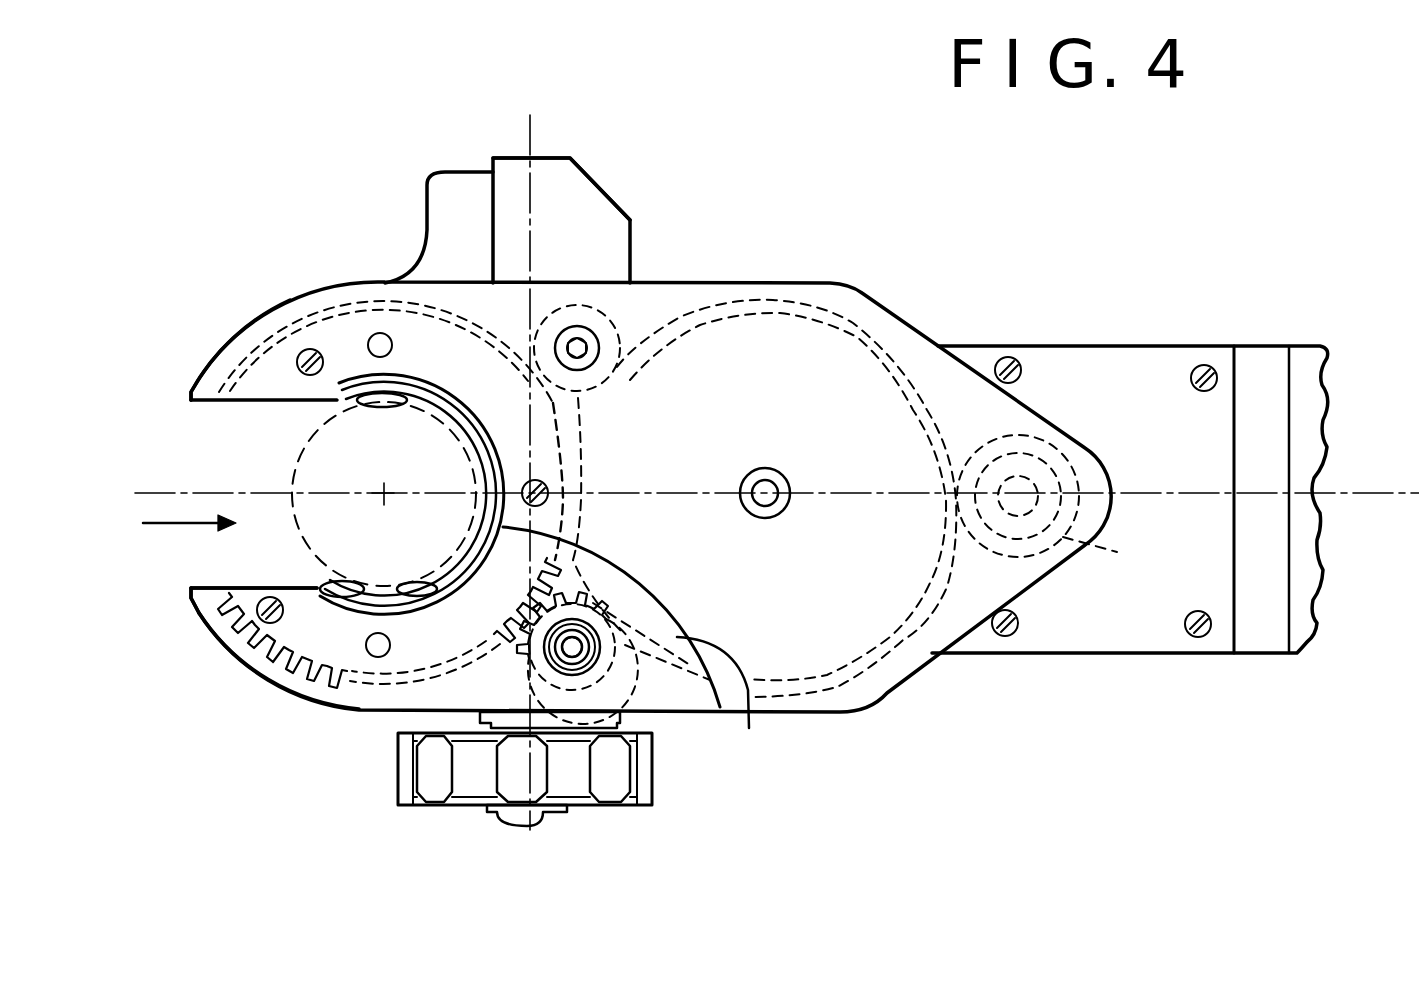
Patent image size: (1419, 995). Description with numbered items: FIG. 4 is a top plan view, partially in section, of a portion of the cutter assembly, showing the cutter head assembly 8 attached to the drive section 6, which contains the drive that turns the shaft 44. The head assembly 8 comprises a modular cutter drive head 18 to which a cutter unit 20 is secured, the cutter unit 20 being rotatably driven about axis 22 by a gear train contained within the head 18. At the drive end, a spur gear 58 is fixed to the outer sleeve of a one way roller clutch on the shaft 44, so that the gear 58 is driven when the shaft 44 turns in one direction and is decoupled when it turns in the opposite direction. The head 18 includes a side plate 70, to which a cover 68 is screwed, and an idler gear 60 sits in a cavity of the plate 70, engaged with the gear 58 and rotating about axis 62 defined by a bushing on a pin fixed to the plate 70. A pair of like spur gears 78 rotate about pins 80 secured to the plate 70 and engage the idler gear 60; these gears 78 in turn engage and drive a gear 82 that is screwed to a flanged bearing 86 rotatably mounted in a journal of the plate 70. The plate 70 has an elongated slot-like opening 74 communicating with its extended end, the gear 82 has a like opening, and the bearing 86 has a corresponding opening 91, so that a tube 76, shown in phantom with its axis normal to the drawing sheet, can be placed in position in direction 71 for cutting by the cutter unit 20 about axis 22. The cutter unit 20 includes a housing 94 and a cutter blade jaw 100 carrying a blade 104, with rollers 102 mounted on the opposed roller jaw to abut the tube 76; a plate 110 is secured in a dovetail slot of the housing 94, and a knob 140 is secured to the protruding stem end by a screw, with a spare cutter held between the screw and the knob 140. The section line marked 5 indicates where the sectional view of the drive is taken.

The section line 5- 5 is at (157, 493).
The drive section 6 is at (1160, 343).
The cutter head assembly 8 is at (912, 308).
The cutter drive head 18 is at (898, 680).
The cutter unit 20 is at (632, 195).
The axis 22 is at (387, 493).
The shaft 44 is at (1110, 562).
The spur gear 58 is at (1030, 443).
The idler gear 60 is at (747, 710).
The axis 62 is at (768, 493).
The cover 68 is at (655, 675).
The side plate 70 is at (212, 603).
The direction 71 is at (183, 527).
The slot-like opening 74 is at (266, 542).
The tube 76 is at (325, 413).
The spur gears 78 is at (600, 335).
The pins 80 is at (573, 337).
The gear 82 is at (333, 660).
The flanged bearing 86 is at (243, 682).
The opening 91 is at (300, 408).
The housing 94 is at (570, 190).
The cutter blade jaw 100 is at (450, 192).
The rollers 102 is at (417, 582).
The blade 104 is at (385, 407).
The plate 110 is at (580, 720).
The knob 140 is at (440, 787).